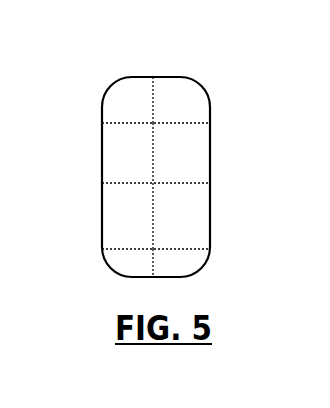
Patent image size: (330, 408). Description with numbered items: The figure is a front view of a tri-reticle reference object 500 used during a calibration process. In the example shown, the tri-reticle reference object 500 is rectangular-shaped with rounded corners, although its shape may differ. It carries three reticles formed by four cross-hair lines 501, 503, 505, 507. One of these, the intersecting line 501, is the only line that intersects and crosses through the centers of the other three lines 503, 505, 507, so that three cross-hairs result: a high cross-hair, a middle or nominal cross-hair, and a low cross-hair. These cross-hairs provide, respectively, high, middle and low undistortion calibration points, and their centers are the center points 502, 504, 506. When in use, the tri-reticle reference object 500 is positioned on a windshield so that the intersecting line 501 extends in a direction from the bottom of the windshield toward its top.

The tri-reticle reference object 500 is at (193, 80).
The intersecting line 501 is at (153, 109).
The center point 502 is at (153, 123).
The cross-hair line 503 is at (120, 125).
The center point 504 is at (153, 183).
The cross-hair line 505 is at (118, 184).
The center point 506 is at (153, 249).
The cross-hair line 507 is at (118, 248).